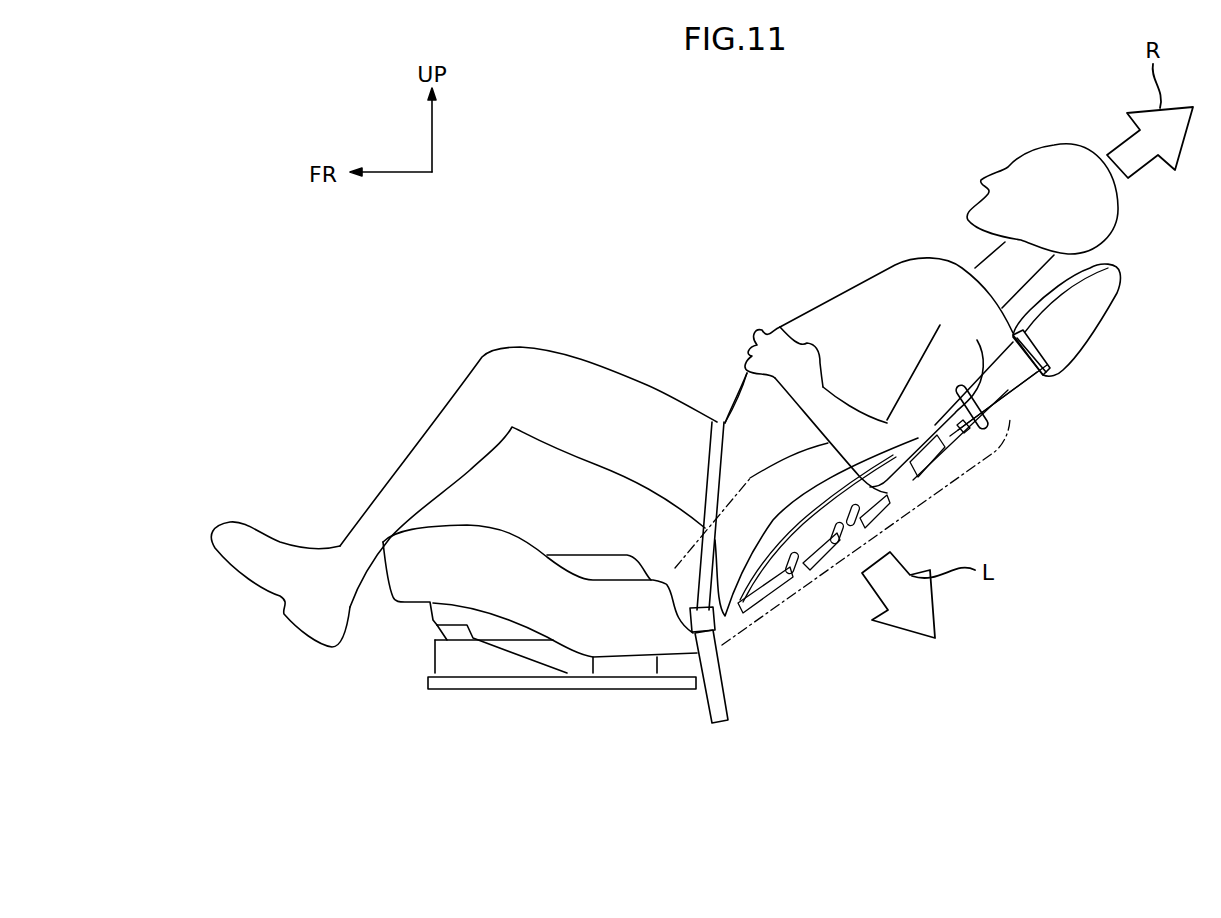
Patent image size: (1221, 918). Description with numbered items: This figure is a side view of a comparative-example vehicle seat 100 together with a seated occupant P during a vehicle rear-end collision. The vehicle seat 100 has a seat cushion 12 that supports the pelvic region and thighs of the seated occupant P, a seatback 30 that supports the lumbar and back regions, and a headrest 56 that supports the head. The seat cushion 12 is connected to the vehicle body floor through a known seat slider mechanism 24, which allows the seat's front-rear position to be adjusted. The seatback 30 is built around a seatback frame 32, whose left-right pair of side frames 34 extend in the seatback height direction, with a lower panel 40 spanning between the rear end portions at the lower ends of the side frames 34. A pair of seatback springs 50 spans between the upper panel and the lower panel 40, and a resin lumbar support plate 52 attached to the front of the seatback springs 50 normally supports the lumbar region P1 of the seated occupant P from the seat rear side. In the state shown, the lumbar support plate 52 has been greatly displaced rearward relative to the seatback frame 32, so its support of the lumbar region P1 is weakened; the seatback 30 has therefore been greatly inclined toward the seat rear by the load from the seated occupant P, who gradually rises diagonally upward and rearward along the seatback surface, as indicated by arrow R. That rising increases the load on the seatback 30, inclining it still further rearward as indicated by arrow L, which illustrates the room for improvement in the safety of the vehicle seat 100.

The seat cushion 12 is at (518, 536).
The seat slider mechanism 24 is at (493, 692).
The seatback 30 is at (951, 485).
The seatback frame 32 is at (749, 514).
The side frames 34 is at (750, 512).
The lower panel 40 is at (773, 603).
The seatback springs 50 is at (853, 538).
The lumbar support plate 52 is at (845, 500).
The headrest 56 is at (1095, 342).
The vehicle seat 100 is at (600, 702).
The seated occupant P is at (870, 278).
The lumbar region P1 is at (752, 410).